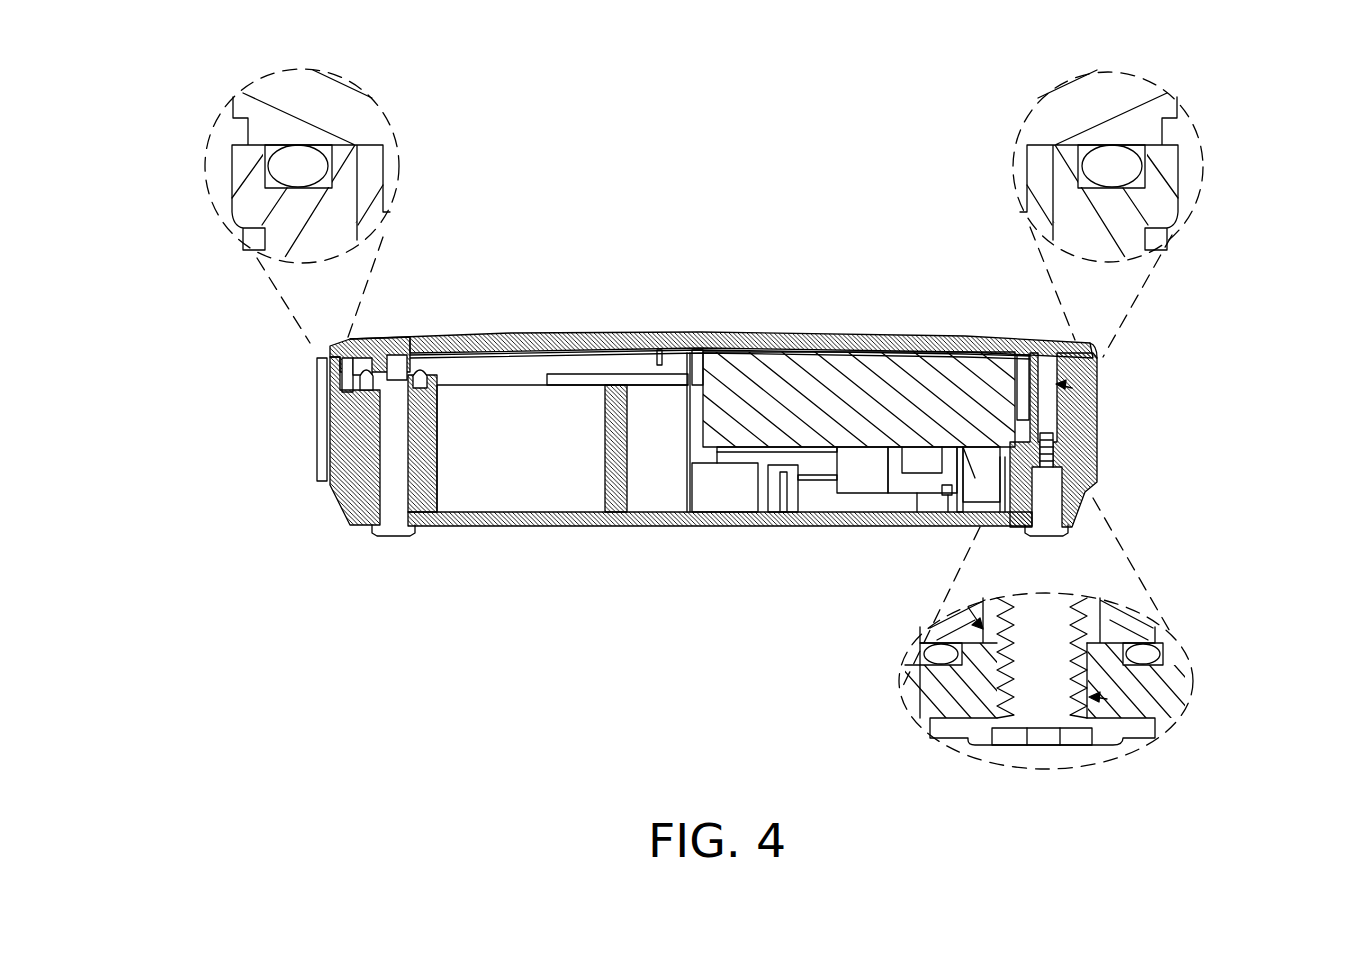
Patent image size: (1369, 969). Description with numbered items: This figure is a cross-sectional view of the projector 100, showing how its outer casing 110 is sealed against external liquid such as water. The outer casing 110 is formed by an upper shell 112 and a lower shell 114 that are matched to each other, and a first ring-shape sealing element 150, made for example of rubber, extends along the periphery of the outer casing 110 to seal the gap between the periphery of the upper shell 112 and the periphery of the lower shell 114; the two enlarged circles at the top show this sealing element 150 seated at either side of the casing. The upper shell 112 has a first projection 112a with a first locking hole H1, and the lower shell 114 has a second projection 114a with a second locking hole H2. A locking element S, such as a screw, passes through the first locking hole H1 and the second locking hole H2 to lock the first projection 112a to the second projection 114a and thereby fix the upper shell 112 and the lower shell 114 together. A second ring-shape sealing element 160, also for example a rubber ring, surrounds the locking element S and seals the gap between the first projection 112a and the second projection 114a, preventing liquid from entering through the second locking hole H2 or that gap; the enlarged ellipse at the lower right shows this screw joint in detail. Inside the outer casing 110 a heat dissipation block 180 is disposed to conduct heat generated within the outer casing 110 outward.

The projector 100 is at (1338, 84).
The outer casing 110 is at (527, 250).
The upper shell 112 is at (511, 335).
The lower shell 114 is at (464, 513).
The first projection 112a is at (1100, 421).
The second projection 114a is at (917, 695).
The first ring-shape sealing element 150 is at (288, 167).
The second ring-shape sealing element 160 is at (937, 655).
The heat dissipation block 180 is at (796, 385).
The first locking hole H1 is at (1100, 392).
The second locking hole H2 is at (1107, 700).
The locking element S is at (1042, 667).